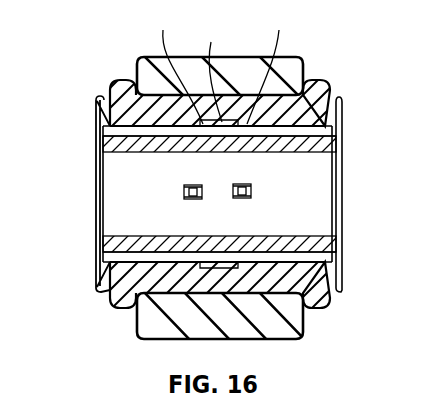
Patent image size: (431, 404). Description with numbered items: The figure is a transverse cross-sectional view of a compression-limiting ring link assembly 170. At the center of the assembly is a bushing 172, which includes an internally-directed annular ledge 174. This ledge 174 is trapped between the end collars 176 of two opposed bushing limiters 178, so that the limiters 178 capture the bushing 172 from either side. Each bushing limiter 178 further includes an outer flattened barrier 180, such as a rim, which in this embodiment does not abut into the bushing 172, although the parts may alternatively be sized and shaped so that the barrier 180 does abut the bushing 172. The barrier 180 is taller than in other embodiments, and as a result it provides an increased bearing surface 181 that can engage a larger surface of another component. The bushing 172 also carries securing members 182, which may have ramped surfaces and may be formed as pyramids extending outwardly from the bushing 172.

The compression-limiting ring link assembly 170 is at (112, 40).
The bushing 172 is at (300, 88).
The internally-directed annular ledge 174 is at (209, 70).
The end collars 176 is at (223, 65).
The bushing limiters 178 is at (110, 84).
The outer flattened barrier 180 is at (343, 101).
The bearing surface 181 is at (342, 121).
The securing members 182 is at (184, 193).